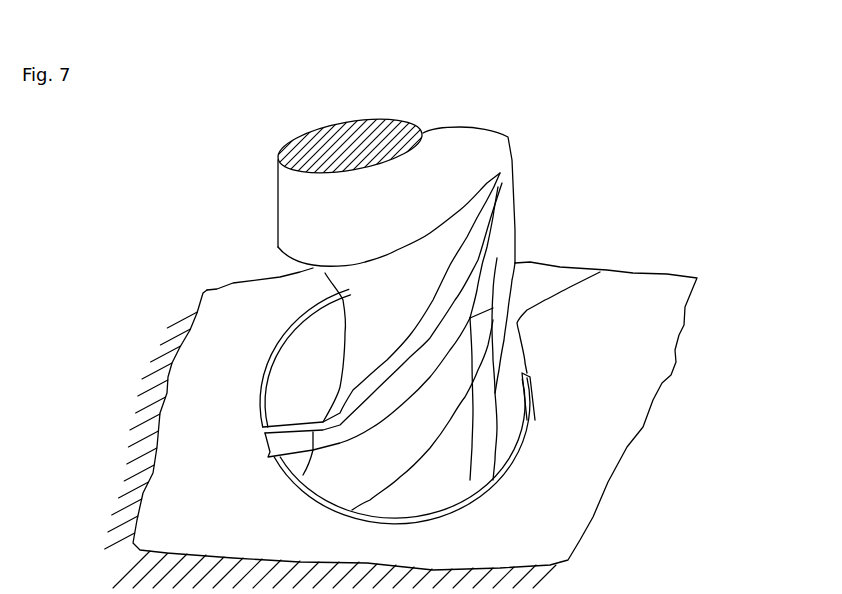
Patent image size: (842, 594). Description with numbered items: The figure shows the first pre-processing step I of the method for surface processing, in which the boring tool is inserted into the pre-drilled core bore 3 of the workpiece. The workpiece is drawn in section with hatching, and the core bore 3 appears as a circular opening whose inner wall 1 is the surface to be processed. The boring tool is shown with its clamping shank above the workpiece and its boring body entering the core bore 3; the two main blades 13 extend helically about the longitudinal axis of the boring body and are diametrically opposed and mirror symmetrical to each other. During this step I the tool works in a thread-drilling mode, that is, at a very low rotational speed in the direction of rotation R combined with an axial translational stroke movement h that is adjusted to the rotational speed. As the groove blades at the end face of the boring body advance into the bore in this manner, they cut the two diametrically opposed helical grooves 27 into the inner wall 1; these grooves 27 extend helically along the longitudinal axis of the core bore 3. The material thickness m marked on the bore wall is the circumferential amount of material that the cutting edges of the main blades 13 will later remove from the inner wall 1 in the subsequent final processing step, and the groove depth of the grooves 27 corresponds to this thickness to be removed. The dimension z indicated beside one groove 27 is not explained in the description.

The inner wall 1 is at (315, 333).
The core bore 3 is at (280, 343).
The main blade 13 is at (305, 472).
The helical groove 27 is at (265, 428).
The pre-processing step I is at (213, 236).
The translational stroke movement h is at (351, 188).
The direction of rotation R is at (391, 160).
The land width z is at (505, 424).
The material thickness m is at (446, 486).